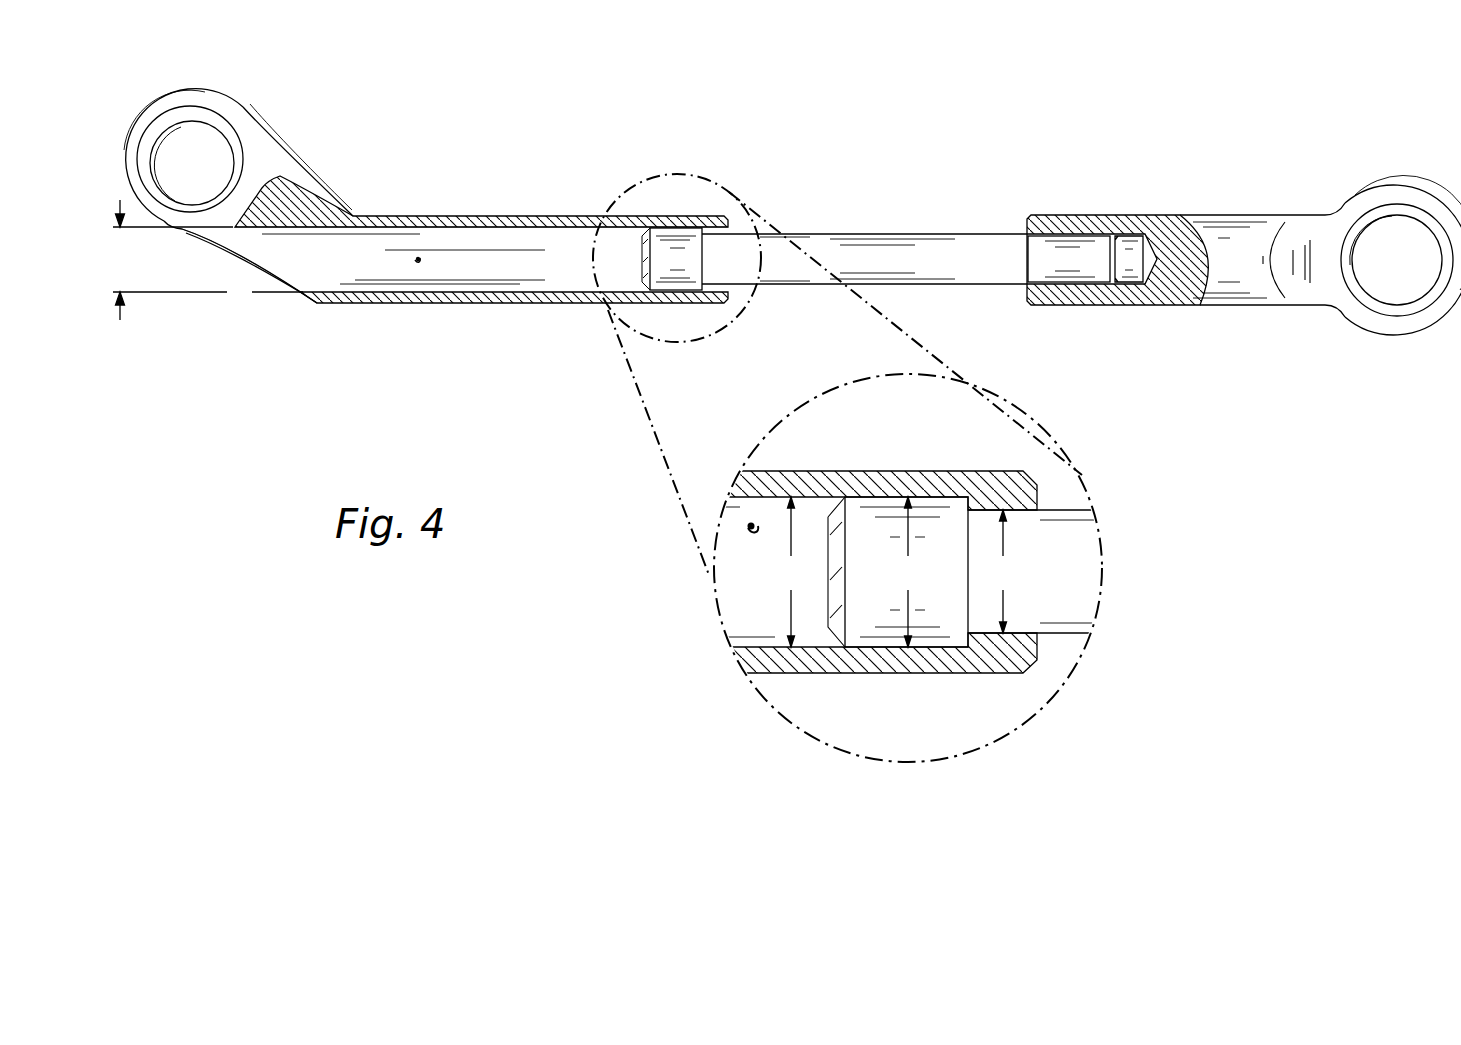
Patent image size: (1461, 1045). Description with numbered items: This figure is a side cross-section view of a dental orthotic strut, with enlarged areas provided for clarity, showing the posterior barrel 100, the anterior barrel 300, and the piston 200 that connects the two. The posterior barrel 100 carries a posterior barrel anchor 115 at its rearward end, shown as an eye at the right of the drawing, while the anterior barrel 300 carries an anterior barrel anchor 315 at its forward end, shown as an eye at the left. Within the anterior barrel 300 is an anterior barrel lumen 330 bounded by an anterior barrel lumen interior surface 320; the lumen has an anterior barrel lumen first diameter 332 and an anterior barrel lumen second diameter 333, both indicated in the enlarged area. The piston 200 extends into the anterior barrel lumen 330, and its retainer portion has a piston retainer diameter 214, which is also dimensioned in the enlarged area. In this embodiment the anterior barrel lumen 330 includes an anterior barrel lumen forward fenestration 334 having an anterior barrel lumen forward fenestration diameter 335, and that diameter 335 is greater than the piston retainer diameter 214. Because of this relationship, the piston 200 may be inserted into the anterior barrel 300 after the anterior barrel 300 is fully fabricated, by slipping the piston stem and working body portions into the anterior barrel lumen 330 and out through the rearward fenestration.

The posterior barrel 100 is at (778, 425).
The posterior barrel anchor 115 is at (1380, 305).
The piston 200 is at (858, 226).
The piston retainer diameter 214 is at (908, 572).
The anterior barrel 300 is at (487, 308).
The anterior barrel anchor 315 is at (229, 138).
The anterior barrel lumen interior surface 320 is at (561, 233).
The anterior barrel lumen 330 is at (418, 258).
The anterior barrel lumen first diameter 332 is at (791, 572).
The anterior barrel lumen second diameter 333 is at (1004, 571).
The anterior barrel lumen forward fenestration 334 is at (262, 272).
The anterior barrel lumen forward fenestration diameter 335 is at (199, 260).